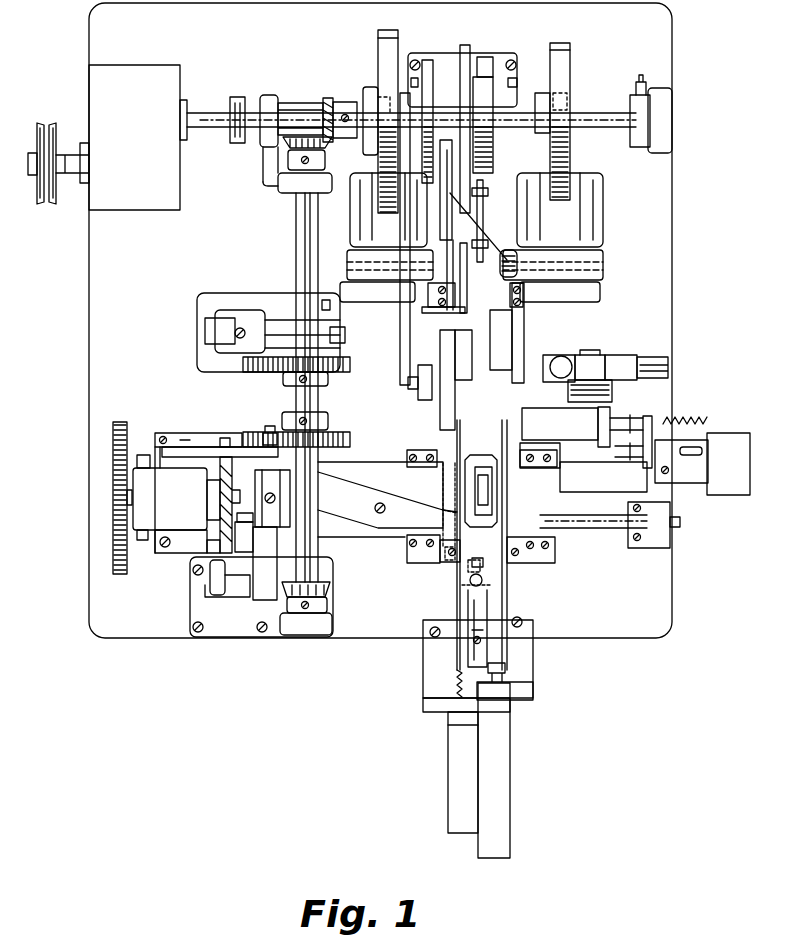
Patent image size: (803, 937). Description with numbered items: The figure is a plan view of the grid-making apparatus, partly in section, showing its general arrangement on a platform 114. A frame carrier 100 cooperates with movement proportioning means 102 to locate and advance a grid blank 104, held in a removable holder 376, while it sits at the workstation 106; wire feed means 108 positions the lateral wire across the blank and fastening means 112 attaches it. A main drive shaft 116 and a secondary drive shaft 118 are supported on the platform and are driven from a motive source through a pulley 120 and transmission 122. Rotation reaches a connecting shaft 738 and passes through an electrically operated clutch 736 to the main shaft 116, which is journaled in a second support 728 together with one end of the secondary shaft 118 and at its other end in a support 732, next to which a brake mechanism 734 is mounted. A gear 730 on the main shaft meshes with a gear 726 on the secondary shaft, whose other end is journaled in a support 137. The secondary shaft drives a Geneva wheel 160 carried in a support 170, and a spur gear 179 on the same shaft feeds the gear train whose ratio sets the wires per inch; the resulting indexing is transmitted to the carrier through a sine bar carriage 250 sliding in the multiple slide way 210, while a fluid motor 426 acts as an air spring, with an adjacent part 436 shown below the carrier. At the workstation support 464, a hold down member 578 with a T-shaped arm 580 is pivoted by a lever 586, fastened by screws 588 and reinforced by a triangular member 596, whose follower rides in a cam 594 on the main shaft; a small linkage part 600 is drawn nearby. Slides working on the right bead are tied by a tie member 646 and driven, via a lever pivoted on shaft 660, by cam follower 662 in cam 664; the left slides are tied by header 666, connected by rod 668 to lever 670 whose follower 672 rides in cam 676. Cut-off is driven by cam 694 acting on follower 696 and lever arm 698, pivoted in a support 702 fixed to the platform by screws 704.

The frame carrier 100 is at (512, 588).
The movement proportioning means 102 is at (330, 540).
The grid blank 104 is at (495, 490).
The workstation 106 is at (400, 407).
The wire feed means 108 is at (556, 402).
The fastening means 112 is at (456, 355).
The platform 114 is at (640, 641).
The main drive shaft 116 is at (598, 107).
The secondary drive shaft 118 is at (290, 243).
The pulley 120 is at (38, 128).
The transmission 122 is at (140, 103).
The support 137 is at (243, 612).
The Geneva wheel 160 is at (233, 452).
The support 170 is at (135, 542).
The spur gear 179 is at (119, 578).
The multiple slide way 210 is at (562, 555).
The sine bar carriage 250 is at (387, 495).
The holder 376 is at (497, 500).
The fluid motor 426 is at (507, 772).
The bar 436 is at (448, 768).
The work station support 464 is at (606, 307).
The hold down member 578 is at (497, 232).
The T-shaped arm 580 is at (522, 328).
The lever 586 is at (447, 217).
The screws 588 is at (447, 305).
The cam 594 is at (425, 60).
The reinforcing member 596 is at (445, 240).
The link 600 is at (484, 240).
The tie member 646 is at (502, 357).
The shaft 660 is at (509, 256).
The cam follower 662 is at (560, 100).
The cam 664 is at (568, 45).
The header 666 is at (420, 392).
The rod 668 is at (408, 383).
The lever 670 is at (397, 298).
The follower 672 is at (378, 97).
The cam 676 is at (384, 30).
The cam 694 is at (488, 90).
The follower 696 is at (485, 57).
The lever arm 698 is at (465, 45).
The support 702 is at (530, 56).
The screws 704 is at (518, 64).
The gear 726 is at (320, 148).
The second support 728 is at (272, 185).
The gear 730 is at (335, 103).
The support 732 is at (665, 130).
The brake mechanism 734 is at (645, 82).
The electrically operated clutch 736 is at (238, 97).
The connecting shaft 738 is at (215, 128).